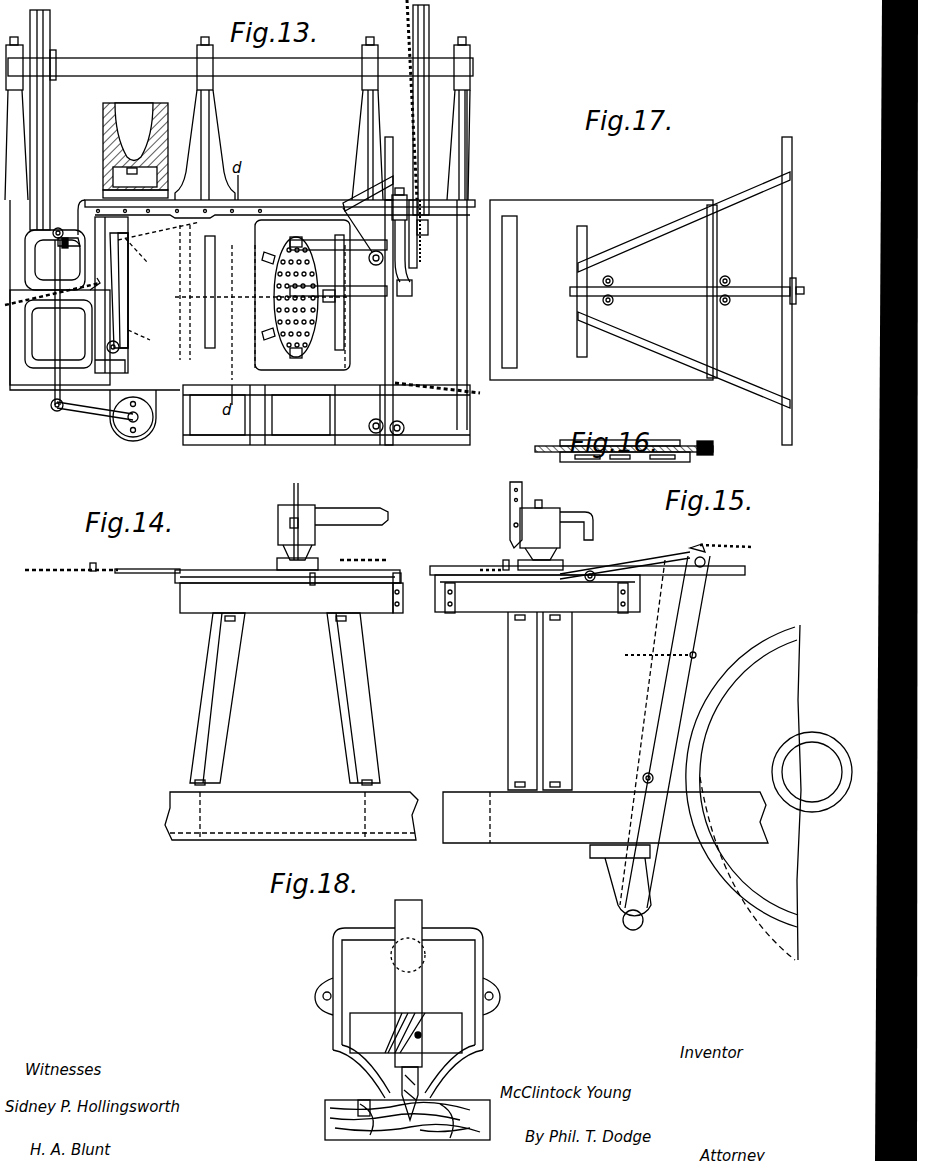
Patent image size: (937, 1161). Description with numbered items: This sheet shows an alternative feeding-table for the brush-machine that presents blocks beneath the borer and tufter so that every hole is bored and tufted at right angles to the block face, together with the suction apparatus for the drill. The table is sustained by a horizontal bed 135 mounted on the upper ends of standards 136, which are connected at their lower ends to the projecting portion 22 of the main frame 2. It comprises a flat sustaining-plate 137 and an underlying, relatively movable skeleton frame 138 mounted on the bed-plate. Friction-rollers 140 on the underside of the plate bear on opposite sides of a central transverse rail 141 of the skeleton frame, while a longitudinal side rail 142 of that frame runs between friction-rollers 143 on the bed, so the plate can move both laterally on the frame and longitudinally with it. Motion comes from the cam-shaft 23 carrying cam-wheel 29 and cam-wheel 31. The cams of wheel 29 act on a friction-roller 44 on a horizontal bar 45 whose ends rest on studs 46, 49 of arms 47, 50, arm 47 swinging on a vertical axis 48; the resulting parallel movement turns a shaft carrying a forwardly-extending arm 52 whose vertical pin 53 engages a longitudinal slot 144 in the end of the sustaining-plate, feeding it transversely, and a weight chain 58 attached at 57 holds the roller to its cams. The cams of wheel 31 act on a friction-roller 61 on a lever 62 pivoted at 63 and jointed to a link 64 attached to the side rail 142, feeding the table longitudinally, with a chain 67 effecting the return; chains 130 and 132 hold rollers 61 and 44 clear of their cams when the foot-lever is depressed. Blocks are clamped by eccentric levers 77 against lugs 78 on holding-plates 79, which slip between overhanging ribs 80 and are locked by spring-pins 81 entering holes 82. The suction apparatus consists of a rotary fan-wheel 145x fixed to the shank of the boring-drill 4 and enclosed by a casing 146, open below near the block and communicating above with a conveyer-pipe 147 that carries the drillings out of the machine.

In FIG. 13, the frame 2 is at (103, 132).
In FIG. 18, the boring-drill 4 is at (430, 1102).
In FIG. 14, the base 22 is at (291, 816).
In FIG. 15, the base 22 is at (605, 817).
In FIG. 13, the cam-shaft 23 is at (125, 63).
In FIG. 15, the cam-shaft 23 is at (782, 770).
In FIG. 13, the cam-wheel 29 is at (42, 24).
In FIG. 13, the cam-wheel 31 is at (426, 22).
In FIG. 15, the cam-wheel 31 is at (743, 792).
In FIG. 13, the friction-roller 44 is at (36, 255).
In FIG. 13, the horizontal bar 45 is at (95, 295).
In FIG. 13, the vertical stud 46 is at (52, 408).
In FIG. 13, the arm 47 is at (76, 416).
In FIG. 13, the vertical axis 48 is at (148, 432).
In FIG. 13, the vertical stud 49 is at (60, 223).
In FIG. 13, the arm 50 is at (74, 237).
In FIG. 13, the forwardly-extending arm 52 is at (107, 347).
In FIG. 13, the vertical pin 53 is at (119, 350).
In FIG. 13, the weight connection point 57 is at (97, 285).
In FIG. 14, the weight connection point 57 is at (94, 565).
In FIG. 15, the weight connection point 57 is at (506, 562).
In FIG. 13, the chain 58 is at (52, 290).
In FIG. 14, the chain 58 is at (50, 568).
In FIG. 15, the chain 58 is at (480, 568).
In FIG. 15, the friction-roller 61 is at (645, 775).
In FIG. 13, the lever 62 is at (417, 220).
In FIG. 15, the lever 62 is at (665, 697).
In FIG. 15, the pivot 63 is at (622, 924).
In FIG. 13, the link 64 is at (400, 243).
In FIG. 15, the link 64 is at (645, 562).
In FIG. 13, the chain 67 is at (408, 9).
In FIG. 15, the chain 67 is at (690, 548).
In FIG. 13, the eccentric levers 77 is at (340, 298).
In FIG. 13, the lugs 78 is at (218, 338).
In FIG. 13, the holding-plates 79 is at (272, 340).
In FIG. 13, the overhanging ribs 80 is at (129, 268).
In FIG. 16, the overhanging ribs 80 is at (672, 446).
In FIG. 13, the spring-pins 81 is at (326, 345).
In FIG. 13, the holes 82 is at (138, 248).
In FIG. 15, the chain 130 is at (640, 653).
In FIG. 13, the chain 132 is at (400, 388).
In FIG. 14, the chain 132 is at (360, 558).
In FIG. 14, the horizontal bed 135 is at (287, 591).
In FIG. 15, the horizontal bed 135 is at (537, 593).
In FIG. 14, the standards 136 is at (337, 680).
In FIG. 13, the sustaining-plate 137 is at (136, 290).
In FIG. 17, the sustaining-plate 137 is at (558, 291).
In FIG. 16, the sustaining-plate 137 is at (550, 452).
In FIG. 14, the sustaining-plate 137 is at (158, 569).
In FIG. 13, the skeleton frame 138 is at (350, 200).
In FIG. 17, the skeleton frame 138 is at (658, 233).
In FIG. 14, the skeleton frame 138 is at (316, 583).
In FIG. 17, the friction-rollers 140 is at (615, 297).
In FIG. 16, the friction-rollers 140 is at (645, 460).
In FIG. 13, the central transverse rail 141 is at (386, 292).
In FIG. 17, the central transverse rail 141 is at (645, 297).
In FIG. 16, the central transverse rail 141 is at (620, 460).
In FIG. 13, the longitudinal side rail 142 is at (393, 346).
In FIG. 17, the longitudinal side rail 142 is at (786, 338).
In FIG. 15, the longitudinal side rail 142 is at (722, 578).
In FIG. 13, the friction-rollers 143 is at (345, 212).
In FIG. 14, the friction-rollers 143 is at (400, 572).
In FIG. 15, the friction-rollers 143 is at (616, 586).
In FIG. 13, the longitudinal slot 144 is at (108, 263).
In FIG. 17, the longitudinal slot 144 is at (515, 330).
In FIG. 18, the rotary fan-wheel 145x is at (463, 1030).
In FIG. 14, the casing 146 is at (278, 522).
In FIG. 15, the casing 146 is at (536, 526).
In FIG. 18, the casing 146 is at (476, 982).
In FIG. 14, the conveyer-pipe 147 is at (352, 510).
In FIG. 15, the conveyer-pipe 147 is at (564, 520).
In FIG. 18, the conveyer-pipe 147 is at (393, 952).